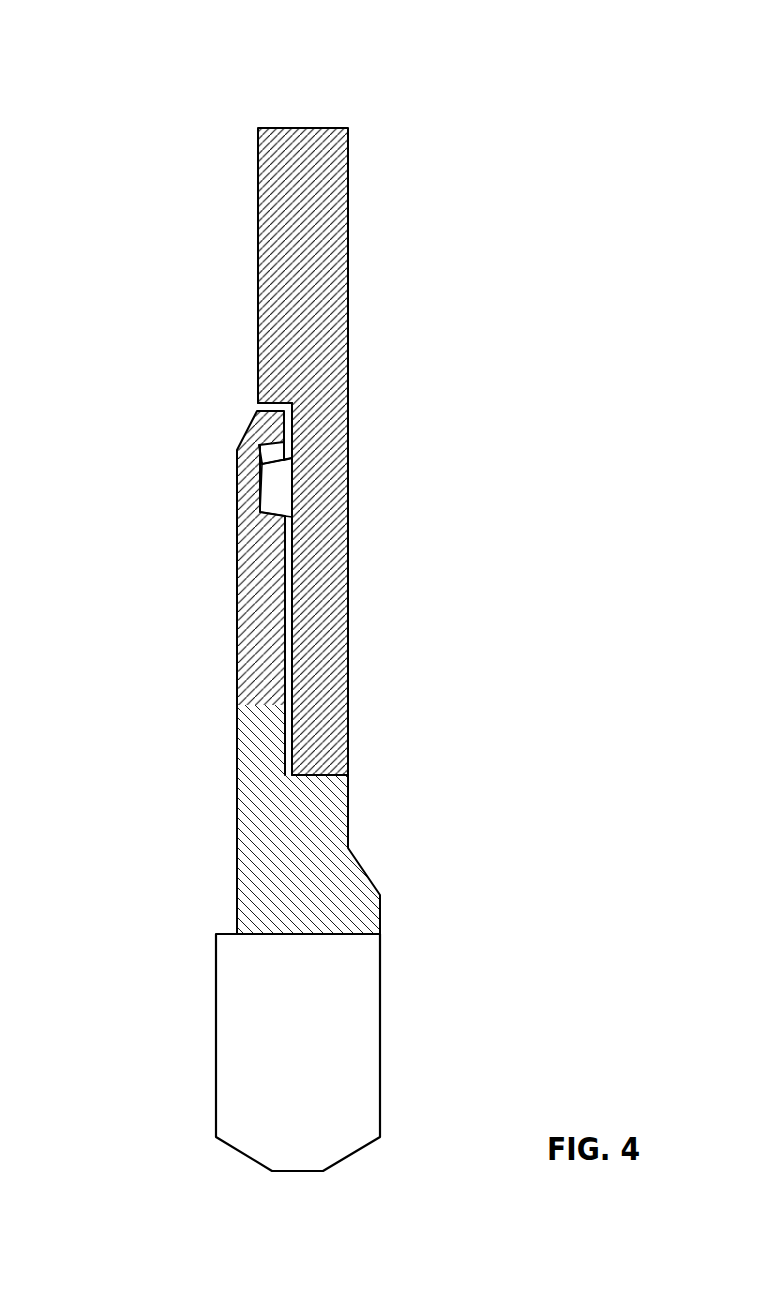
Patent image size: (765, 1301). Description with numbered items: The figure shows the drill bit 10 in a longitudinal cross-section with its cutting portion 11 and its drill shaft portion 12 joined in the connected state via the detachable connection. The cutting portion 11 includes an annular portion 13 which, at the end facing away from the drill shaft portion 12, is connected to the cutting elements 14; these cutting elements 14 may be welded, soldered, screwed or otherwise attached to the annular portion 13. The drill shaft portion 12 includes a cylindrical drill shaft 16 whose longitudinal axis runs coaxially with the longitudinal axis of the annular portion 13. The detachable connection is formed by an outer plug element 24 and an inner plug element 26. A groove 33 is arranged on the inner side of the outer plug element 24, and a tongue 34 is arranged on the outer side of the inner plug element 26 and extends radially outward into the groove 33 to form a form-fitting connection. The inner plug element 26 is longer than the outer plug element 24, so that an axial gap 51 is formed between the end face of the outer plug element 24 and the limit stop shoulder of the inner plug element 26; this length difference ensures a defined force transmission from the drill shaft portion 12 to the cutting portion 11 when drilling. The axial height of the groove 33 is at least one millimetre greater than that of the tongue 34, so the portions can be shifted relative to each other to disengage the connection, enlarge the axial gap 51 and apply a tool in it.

The drill bit 10 is at (330, 590).
The cutting portion 11 is at (263, 938).
The drill shaft portion 12 is at (327, 392).
The annular portion 13 is at (275, 843).
The cutting elements 14 is at (335, 1052).
The cylindrical drill shaft 16 is at (275, 198).
The outer plug element 24 is at (202, 593).
The inner plug element 26 is at (382, 607).
The groove 33 is at (263, 453).
The tongue 34 is at (280, 483).
The axial gap 51 is at (245, 397).